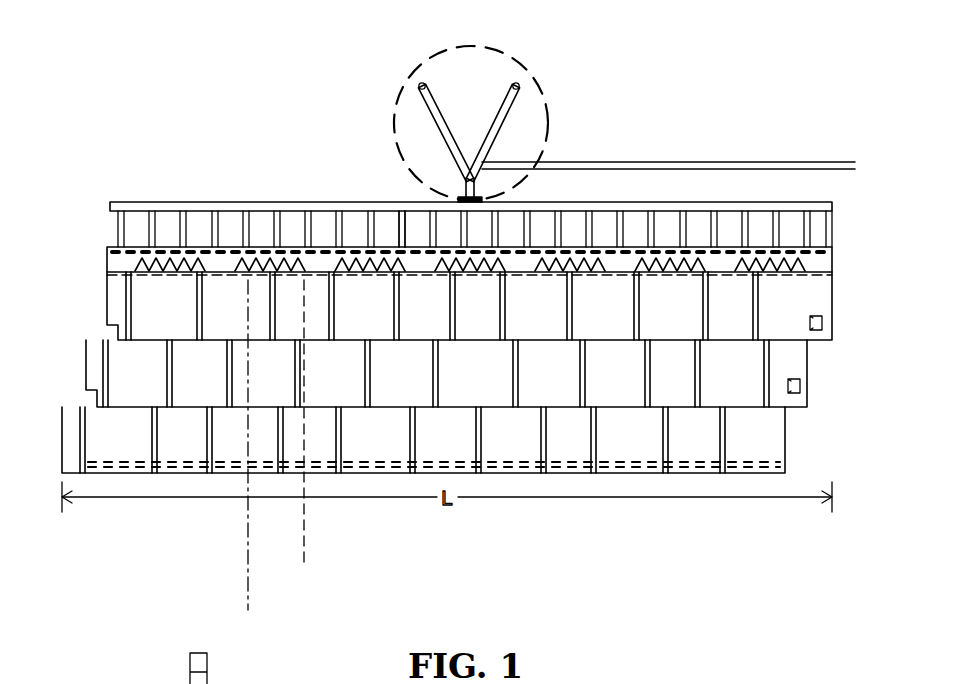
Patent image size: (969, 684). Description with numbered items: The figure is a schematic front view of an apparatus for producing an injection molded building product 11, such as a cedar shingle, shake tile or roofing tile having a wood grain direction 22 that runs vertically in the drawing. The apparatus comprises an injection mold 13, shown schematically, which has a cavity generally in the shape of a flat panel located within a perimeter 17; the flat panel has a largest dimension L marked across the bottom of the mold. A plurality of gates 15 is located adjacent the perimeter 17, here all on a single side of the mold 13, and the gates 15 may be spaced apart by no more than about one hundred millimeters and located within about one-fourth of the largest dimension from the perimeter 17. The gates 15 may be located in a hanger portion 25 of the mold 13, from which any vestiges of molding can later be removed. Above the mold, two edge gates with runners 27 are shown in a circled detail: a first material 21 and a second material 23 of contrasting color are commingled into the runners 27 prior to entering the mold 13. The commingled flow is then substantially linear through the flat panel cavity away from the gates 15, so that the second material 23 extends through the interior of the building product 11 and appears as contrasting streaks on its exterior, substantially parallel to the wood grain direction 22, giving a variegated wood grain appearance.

The building product 11 is at (467, 360).
The injection mold 13 is at (97, 247).
The gates 15 is at (117, 226).
The perimeter 17 is at (386, 245).
The first material 21 is at (418, 81).
The wood grain direction 22 is at (202, 445).
The second material 23 is at (515, 76).
The hanger portion 25 is at (840, 262).
The runners 27 is at (586, 104).